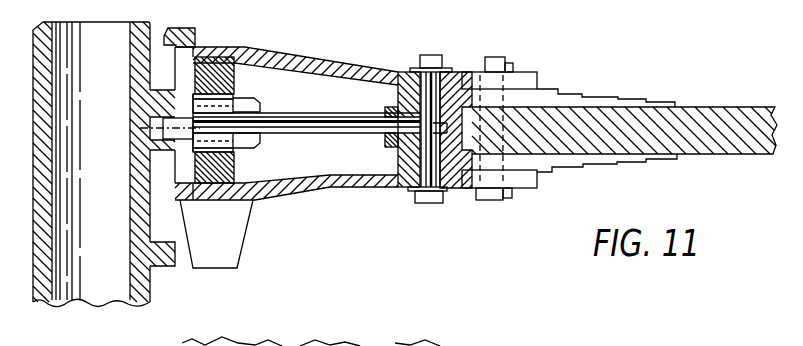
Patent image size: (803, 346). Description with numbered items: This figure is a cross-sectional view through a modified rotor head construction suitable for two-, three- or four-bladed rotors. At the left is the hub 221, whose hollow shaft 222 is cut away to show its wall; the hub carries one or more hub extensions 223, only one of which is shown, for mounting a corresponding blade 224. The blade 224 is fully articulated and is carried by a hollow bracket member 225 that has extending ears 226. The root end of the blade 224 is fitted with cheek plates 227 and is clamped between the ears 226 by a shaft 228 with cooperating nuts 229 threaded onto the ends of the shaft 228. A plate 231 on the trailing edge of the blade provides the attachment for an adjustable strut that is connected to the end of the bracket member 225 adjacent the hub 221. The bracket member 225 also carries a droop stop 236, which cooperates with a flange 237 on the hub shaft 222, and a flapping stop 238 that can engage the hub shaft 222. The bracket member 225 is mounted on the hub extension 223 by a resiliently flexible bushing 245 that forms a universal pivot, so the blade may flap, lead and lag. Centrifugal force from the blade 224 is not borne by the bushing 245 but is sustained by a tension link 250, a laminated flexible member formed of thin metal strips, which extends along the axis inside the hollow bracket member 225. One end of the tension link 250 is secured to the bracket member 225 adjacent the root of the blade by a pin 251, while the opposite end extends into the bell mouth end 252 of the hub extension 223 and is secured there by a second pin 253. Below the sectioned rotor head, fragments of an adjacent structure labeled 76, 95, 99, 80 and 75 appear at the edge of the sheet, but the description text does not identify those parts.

The hub 221 is at (95, 0).
The hollow shaft 222 is at (88, 294).
The hub extension 223 is at (172, 116).
The blade 224 is at (679, 0).
The hollow bracket member 225 is at (302, 196).
The ears 226 is at (537, 83).
The cheek plates 227 is at (636, 100).
The shaft 228 is at (183, 26).
The nuts 229 is at (504, 63).
The plate 231 is at (555, 7).
The droop stop 236 is at (230, 244).
The flange 237 is at (167, 266).
The flapping stop 238 is at (202, 29).
The resiliently flexible bushing 245 is at (235, 46).
The tension link 250 is at (356, 112).
The pin 251 is at (425, 204).
The bell mouth end 252 is at (252, 148).
The pin 253 is at (240, 100).
The member 76 is at (243, 345).
The member 95 is at (300, 345).
The member 99 is at (420, 345).
The member 80 is at (493, 341).
The member 75 is at (538, 341).